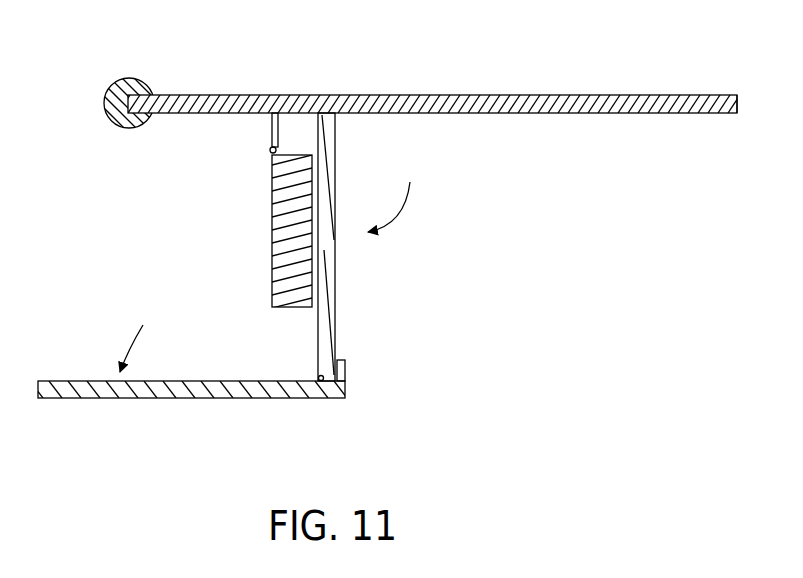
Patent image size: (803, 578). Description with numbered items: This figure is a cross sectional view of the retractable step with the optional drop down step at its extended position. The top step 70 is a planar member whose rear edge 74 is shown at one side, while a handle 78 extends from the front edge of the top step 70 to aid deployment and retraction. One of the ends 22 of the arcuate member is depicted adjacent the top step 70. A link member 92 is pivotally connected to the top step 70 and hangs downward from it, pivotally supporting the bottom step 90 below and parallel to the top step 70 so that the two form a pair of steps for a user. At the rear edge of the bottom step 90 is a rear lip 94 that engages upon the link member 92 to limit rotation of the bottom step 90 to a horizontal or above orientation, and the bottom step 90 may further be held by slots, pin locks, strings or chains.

The top step 70 is at (468, 95).
The rear edge 74 is at (733, 95).
The handle 78 is at (132, 78).
The ends 22 is at (272, 242).
The link members 92 is at (336, 257).
The rear lip 94 is at (347, 385).
The bottom step 90 is at (153, 398).